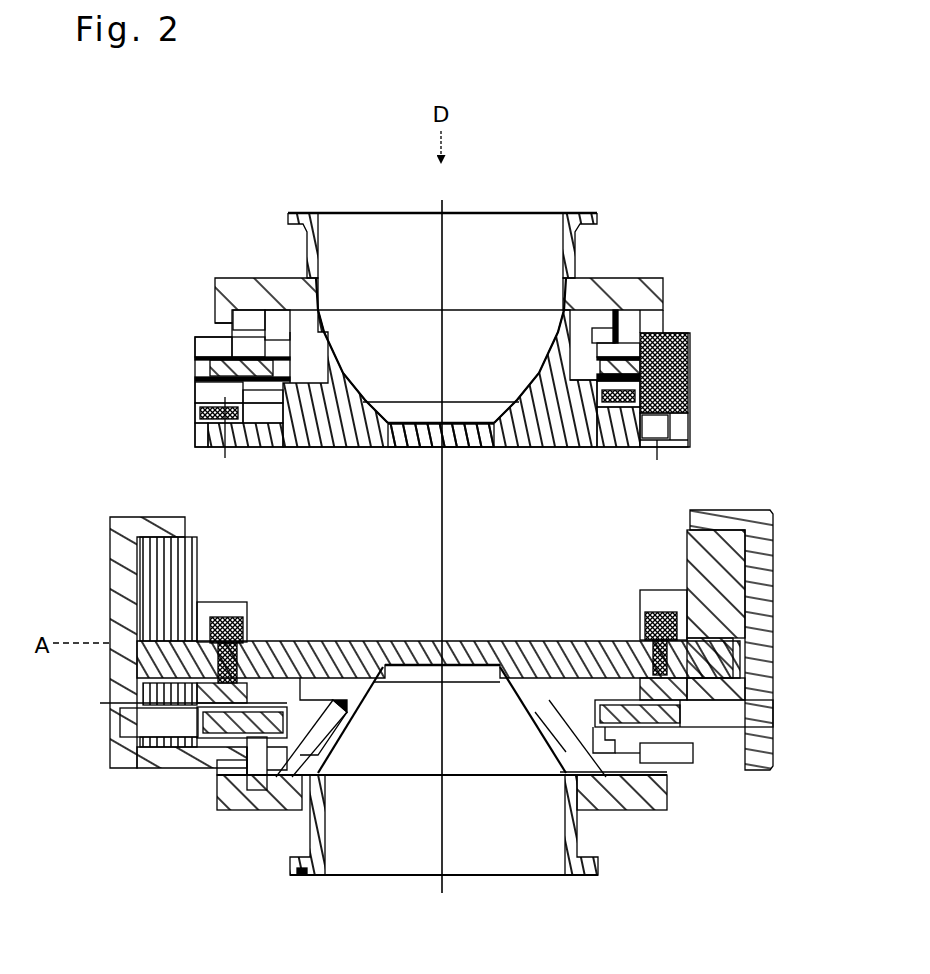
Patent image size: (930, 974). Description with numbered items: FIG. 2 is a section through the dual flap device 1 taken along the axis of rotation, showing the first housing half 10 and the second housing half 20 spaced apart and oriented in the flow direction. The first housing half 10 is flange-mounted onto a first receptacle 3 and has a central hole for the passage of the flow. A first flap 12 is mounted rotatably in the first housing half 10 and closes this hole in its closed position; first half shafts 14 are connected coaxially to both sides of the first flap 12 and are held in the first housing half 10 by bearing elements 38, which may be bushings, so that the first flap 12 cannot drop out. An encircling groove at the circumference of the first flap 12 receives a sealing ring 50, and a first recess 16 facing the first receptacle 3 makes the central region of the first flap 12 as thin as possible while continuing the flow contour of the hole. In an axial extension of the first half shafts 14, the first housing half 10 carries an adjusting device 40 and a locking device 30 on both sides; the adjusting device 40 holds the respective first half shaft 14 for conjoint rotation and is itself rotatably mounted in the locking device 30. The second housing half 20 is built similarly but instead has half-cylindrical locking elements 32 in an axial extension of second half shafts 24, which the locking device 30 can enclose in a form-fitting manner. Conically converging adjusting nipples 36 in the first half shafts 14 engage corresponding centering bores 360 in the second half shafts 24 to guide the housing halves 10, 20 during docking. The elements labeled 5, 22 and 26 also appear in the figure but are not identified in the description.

The dual flap device 1 is at (638, 187).
The first receptacle 3 is at (605, 795).
The upper housing part 5 is at (568, 214).
The first housing half 10 is at (572, 725).
The first flap 12 is at (473, 667).
The first half shafts 14 is at (689, 660).
The first recess 16 is at (371, 683).
The second housing half 20 is at (573, 343).
The optical element 22 is at (397, 432).
The second half shafts 24 is at (688, 408).
The conical surface 26 is at (386, 423).
The locking device 30 is at (655, 600).
The locking elements 32 is at (650, 340).
The adjusting nipples 36 is at (660, 617).
The bearing elements 38 is at (667, 343).
The adjusting device 40 is at (720, 677).
The sealing ring 50 is at (340, 707).
The centering bores 360 is at (677, 430).